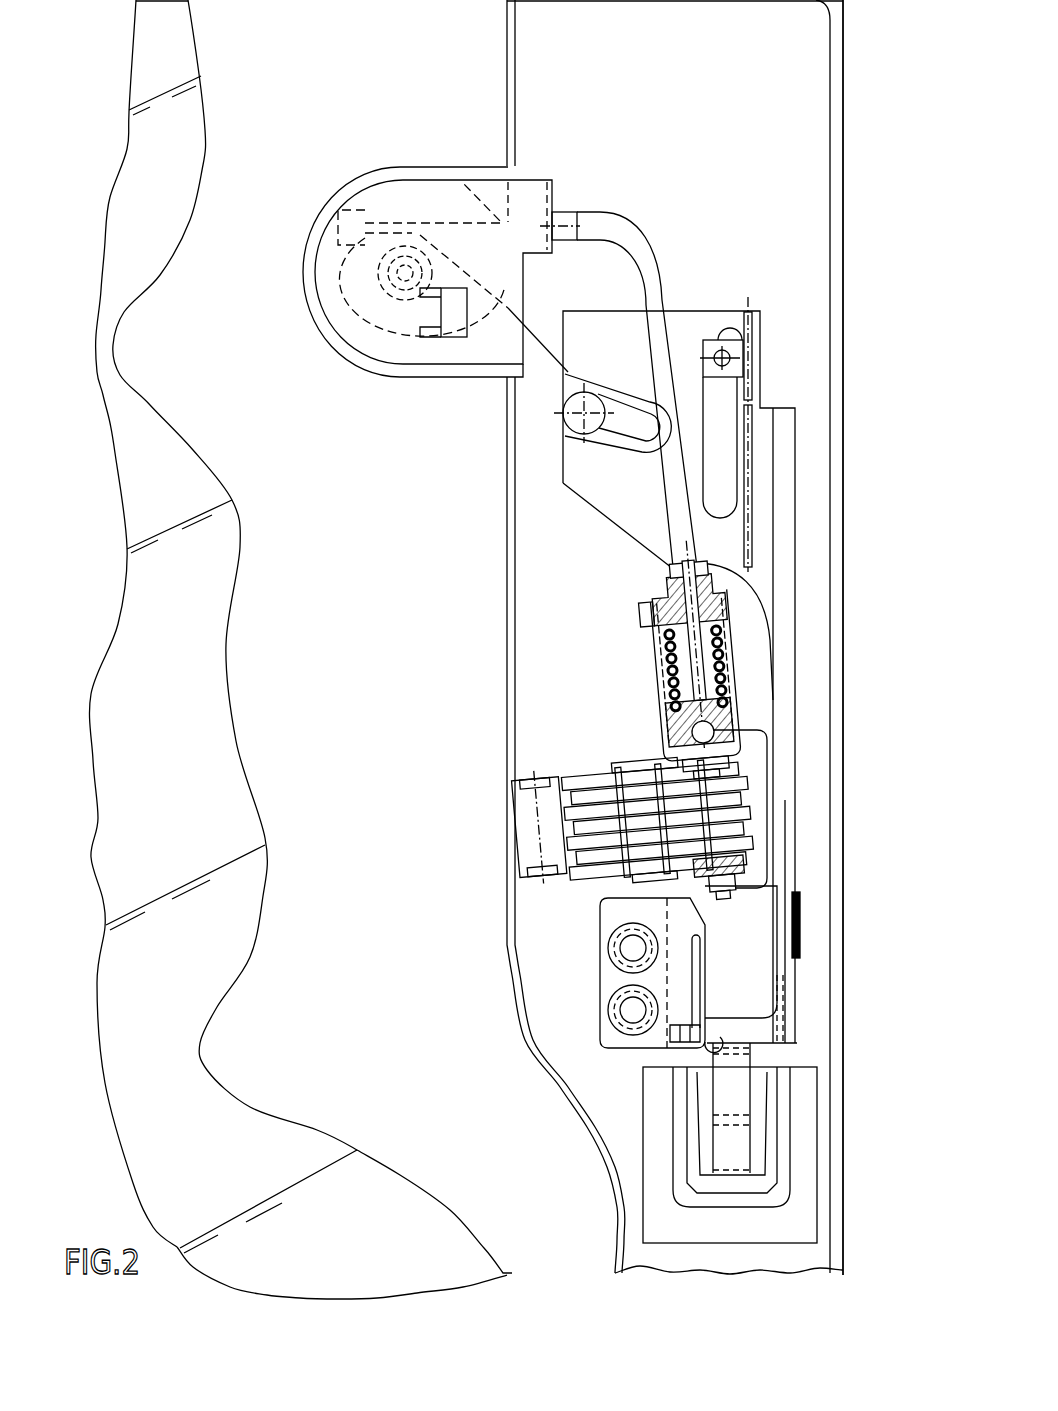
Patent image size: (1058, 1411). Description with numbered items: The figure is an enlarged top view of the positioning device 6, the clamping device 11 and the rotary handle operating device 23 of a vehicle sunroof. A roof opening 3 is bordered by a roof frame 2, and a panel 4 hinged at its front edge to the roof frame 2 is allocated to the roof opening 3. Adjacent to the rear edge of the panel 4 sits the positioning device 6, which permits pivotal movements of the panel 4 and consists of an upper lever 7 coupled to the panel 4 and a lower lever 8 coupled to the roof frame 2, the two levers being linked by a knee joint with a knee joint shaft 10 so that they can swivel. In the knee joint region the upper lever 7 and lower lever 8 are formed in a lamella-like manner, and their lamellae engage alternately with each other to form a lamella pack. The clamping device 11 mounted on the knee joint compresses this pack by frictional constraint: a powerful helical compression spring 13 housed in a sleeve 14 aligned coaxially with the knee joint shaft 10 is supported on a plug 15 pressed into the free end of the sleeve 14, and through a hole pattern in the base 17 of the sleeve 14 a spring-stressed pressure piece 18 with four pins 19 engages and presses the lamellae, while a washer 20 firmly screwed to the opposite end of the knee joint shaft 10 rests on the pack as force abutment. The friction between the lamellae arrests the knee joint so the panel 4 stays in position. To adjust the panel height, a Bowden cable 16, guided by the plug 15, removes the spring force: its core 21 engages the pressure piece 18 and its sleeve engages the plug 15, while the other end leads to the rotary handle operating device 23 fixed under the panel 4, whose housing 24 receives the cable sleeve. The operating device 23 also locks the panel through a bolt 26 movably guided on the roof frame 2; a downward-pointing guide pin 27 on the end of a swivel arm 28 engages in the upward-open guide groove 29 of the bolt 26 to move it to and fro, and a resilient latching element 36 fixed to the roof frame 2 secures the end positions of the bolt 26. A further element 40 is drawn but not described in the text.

The roof frame 2 is at (680, 130).
The roof opening 3 is at (348, 120).
The panel 4 is at (178, 158).
The positioning device 6 is at (770, 778).
The upper lever 7 is at (583, 782).
The lower lever 8 is at (606, 770).
The knee joint shaft 10 is at (722, 893).
The clamping device 11 is at (740, 690).
The helical compression spring 13 is at (663, 637).
The sleeve 14 is at (660, 683).
The plug 15 is at (660, 612).
The Bowden cable 16 is at (645, 235).
The base 17 is at (700, 768).
The pressure piece 18 is at (733, 709).
The pins 19 is at (720, 747).
The washer 20 is at (737, 865).
The core 21 is at (672, 582).
The rotary handle operating device 23 is at (301, 311).
The housing 24 is at (530, 190).
The bolt 26 is at (786, 579).
The guide pin 27 is at (566, 425).
The swivel arm 28 is at (543, 375).
The guide groove 29 is at (625, 433).
The resilient latching element 36 is at (703, 1017).
The lock plate 40 is at (797, 1005).